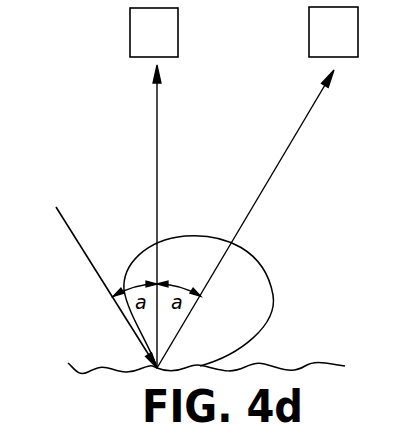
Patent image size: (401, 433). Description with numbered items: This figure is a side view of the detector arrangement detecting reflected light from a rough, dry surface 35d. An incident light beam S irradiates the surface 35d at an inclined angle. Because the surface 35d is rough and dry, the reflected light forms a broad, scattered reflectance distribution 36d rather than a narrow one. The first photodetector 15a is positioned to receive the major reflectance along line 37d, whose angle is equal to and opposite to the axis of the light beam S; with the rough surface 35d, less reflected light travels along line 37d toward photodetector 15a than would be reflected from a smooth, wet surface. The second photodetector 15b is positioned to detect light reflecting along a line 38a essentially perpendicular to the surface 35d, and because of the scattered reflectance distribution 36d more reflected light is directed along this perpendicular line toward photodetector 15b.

The first photodetector 15a is at (320, 35).
The second photodetector 15b is at (137, 35).
The rough and dry surface 35d is at (296, 368).
The reflectance distribution 36d is at (255, 265).
The line of major reflectance 37d is at (300, 128).
The normal / scattered beam direction 38a is at (157, 140).
The light beam S is at (70, 233).